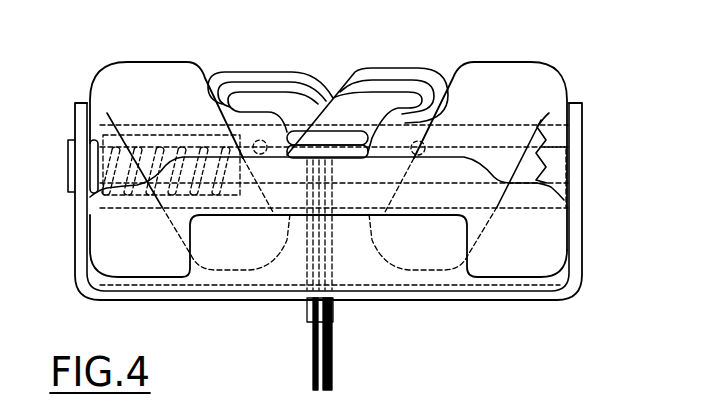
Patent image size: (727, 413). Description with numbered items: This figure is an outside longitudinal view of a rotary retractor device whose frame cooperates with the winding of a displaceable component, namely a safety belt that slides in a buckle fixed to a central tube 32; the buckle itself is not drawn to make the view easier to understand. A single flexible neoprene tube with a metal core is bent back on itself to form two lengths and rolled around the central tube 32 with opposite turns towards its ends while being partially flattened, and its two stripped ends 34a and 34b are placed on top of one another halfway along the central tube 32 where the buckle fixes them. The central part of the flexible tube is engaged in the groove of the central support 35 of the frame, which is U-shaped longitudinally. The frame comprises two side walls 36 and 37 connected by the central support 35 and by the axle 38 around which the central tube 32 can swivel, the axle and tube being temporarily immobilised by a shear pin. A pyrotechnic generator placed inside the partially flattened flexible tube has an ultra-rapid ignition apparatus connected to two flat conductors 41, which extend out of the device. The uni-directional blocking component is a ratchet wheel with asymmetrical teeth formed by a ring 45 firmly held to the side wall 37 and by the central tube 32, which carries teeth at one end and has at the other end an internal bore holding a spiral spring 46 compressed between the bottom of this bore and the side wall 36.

The central tube 32 is at (414, 137).
The first end of the flexible tube 34a is at (292, 118).
The second end of the flexible tube 34b is at (336, 100).
The central support 35 is at (263, 272).
The side wall 36 is at (84, 240).
The side wall 37 is at (579, 238).
The axle 38 is at (551, 173).
The flat conductors 41 is at (330, 340).
The ring 45 is at (551, 137).
The spiral spring 46 is at (90, 160).